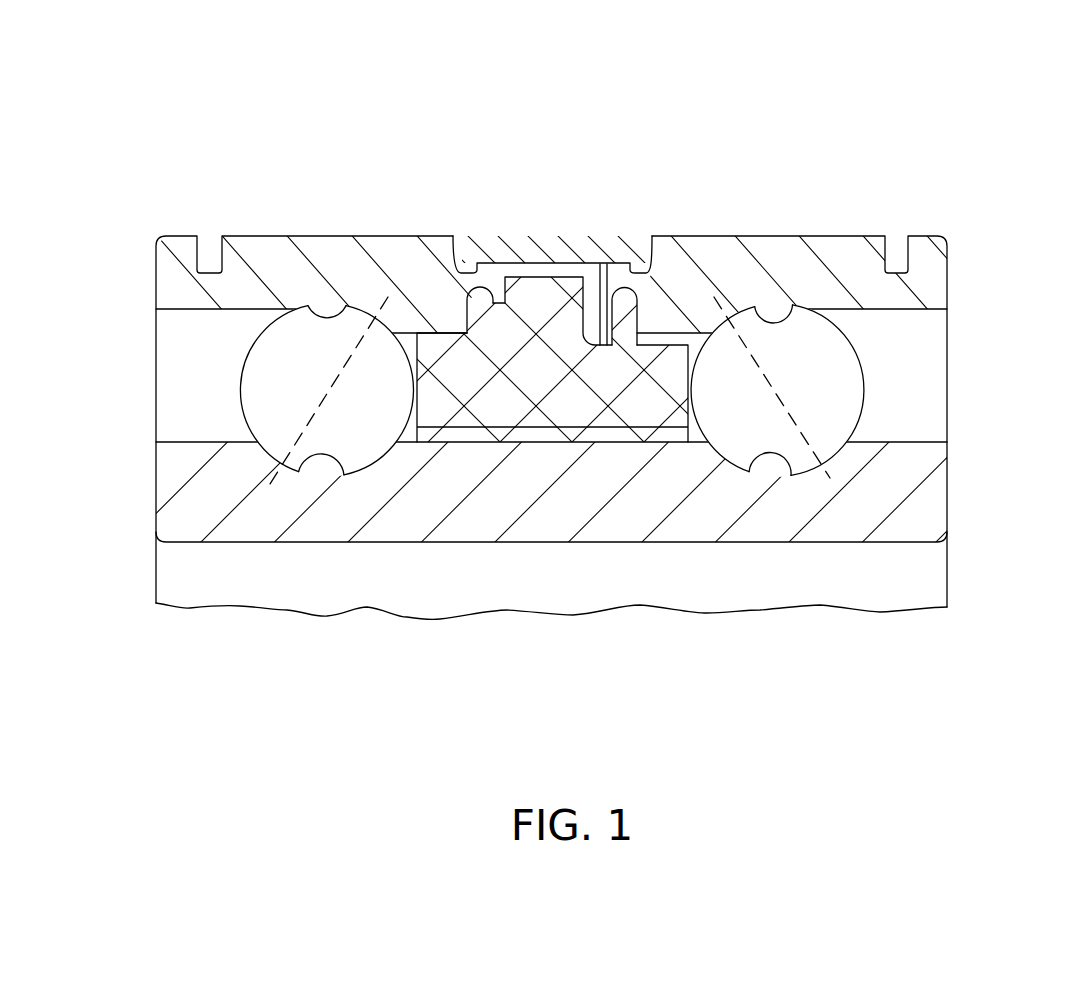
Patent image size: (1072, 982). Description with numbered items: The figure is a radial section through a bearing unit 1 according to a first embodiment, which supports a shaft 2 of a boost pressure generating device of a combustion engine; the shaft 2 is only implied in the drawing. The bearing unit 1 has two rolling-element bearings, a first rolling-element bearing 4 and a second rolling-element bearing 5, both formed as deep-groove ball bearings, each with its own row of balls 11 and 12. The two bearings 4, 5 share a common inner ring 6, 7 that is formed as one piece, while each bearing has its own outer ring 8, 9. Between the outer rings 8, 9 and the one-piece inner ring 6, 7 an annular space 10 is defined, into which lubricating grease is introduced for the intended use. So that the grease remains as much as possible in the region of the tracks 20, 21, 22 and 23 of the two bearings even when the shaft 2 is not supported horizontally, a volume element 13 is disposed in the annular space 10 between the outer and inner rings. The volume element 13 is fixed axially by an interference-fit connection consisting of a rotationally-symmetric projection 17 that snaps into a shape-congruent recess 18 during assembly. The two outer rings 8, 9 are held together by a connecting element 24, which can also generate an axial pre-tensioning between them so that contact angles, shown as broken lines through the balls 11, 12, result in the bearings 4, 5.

The bearing unit 1 is at (773, 158).
The shaft 2 is at (895, 584).
The first rolling-element bearing 4 is at (312, 226).
The second rolling-element bearing 5 is at (821, 226).
The inner ring 6 is at (272, 508).
The inner ring 7 is at (918, 508).
The outer ring 8 is at (405, 265).
The outer ring 9 is at (862, 267).
The annular space 10 is at (188, 384).
The rolling bodies 11 is at (292, 418).
The rolling bodies 12 is at (833, 415).
The volume element 13 is at (575, 390).
The projection 17 is at (506, 303).
The recess 18 is at (489, 297).
The track 20 is at (310, 455).
The track 21 is at (305, 306).
The track 22 is at (788, 466).
The track 23 is at (757, 307).
The connecting element 24 is at (592, 257).